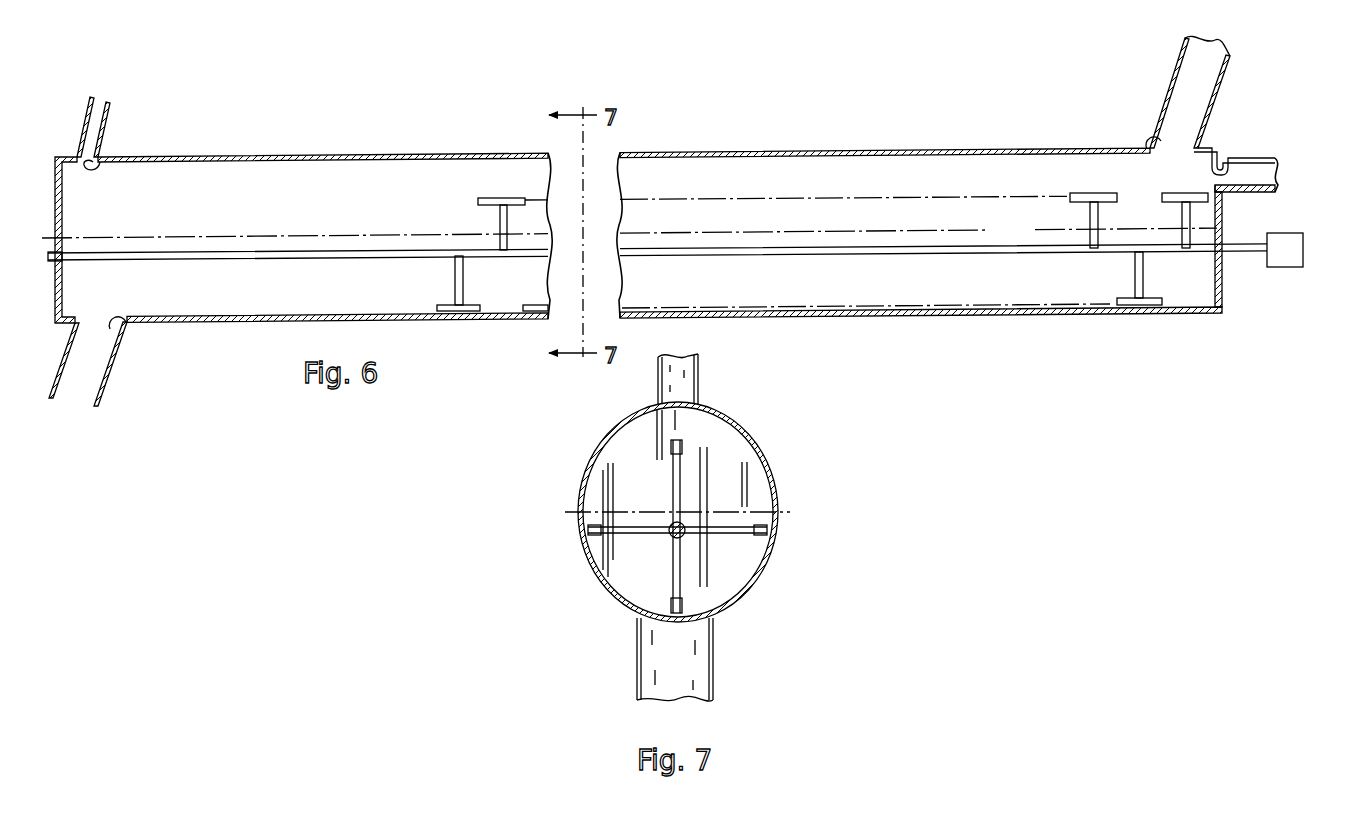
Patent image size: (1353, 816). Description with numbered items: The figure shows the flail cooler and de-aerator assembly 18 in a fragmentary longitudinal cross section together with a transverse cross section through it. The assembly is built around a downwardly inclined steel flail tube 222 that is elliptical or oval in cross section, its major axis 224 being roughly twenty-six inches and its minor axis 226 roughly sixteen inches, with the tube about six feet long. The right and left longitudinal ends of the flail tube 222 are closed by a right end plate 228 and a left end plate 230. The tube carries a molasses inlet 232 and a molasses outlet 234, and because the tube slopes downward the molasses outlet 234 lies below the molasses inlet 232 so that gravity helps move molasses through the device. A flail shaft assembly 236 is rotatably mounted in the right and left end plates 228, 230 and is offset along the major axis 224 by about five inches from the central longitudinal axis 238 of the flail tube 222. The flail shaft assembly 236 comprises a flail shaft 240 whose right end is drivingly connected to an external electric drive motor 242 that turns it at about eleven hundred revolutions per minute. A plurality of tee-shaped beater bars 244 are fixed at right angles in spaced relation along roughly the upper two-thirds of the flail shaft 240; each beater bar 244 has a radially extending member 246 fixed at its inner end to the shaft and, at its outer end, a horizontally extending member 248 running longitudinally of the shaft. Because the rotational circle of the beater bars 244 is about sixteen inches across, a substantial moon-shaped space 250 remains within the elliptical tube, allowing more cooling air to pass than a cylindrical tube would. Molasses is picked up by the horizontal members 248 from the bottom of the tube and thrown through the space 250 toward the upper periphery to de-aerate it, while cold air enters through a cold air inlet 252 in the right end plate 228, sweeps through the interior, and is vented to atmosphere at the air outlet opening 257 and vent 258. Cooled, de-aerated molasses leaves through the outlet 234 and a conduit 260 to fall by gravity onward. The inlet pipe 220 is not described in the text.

In FIG. 6, the flail cooler and de-aerator assembly 18 is at (849, 129).
In FIG. 7, the flail cooler and de-aerator assembly 18 is at (849, 578).
In FIG. 6, the inlet pipe 220 is at (1180, 52).
In FIG. 7, the inlet pipe 220 is at (700, 381).
In FIG. 6, the flail tube 222 is at (503, 152).
In FIG. 7, the flail tube 222 is at (778, 475).
In FIG. 7, the major axis 224 is at (675, 431).
In FIG. 7, the minor axis 226 is at (754, 508).
In FIG. 6, the right end plate 228 is at (1222, 157).
In FIG. 6, the left end plate 230 is at (53, 166).
In FIG. 6, the molasses inlet 232 is at (1158, 146).
In FIG. 6, the molasses outlet 234 is at (119, 331).
In FIG. 6, the flail shaft assembly 236 is at (1072, 220).
In FIG. 7, the flail shaft assembly 236 is at (690, 518).
In FIG. 6, the central longitudinal axis 238 is at (683, 233).
In FIG. 6, the flail shaft 240 is at (749, 257).
In FIG. 7, the flail shaft 240 is at (685, 540).
In FIG. 6, the electric drive motor 242 is at (1270, 233).
In FIG. 6, the beater bar 244 is at (1131, 312).
In FIG. 7, the beater bar 244 is at (669, 483).
In FIG. 6, the radially extending member 246 is at (500, 224).
In FIG. 7, the radially extending member 246 is at (694, 598).
In FIG. 6, the horizontally extending member 248 is at (491, 198).
In FIG. 7, the horizontally extending member 248 is at (684, 443).
In FIG. 6, the moon-shaped space 250 is at (663, 180).
In FIG. 7, the moon-shaped space 250 is at (646, 438).
In FIG. 6, the cold air inlet 252 is at (1238, 159).
In FIG. 6, the air outlet opening 257 is at (96, 160).
In FIG. 6, the vent 258 is at (91, 100).
In FIG. 6, the conduit 260 is at (100, 395).